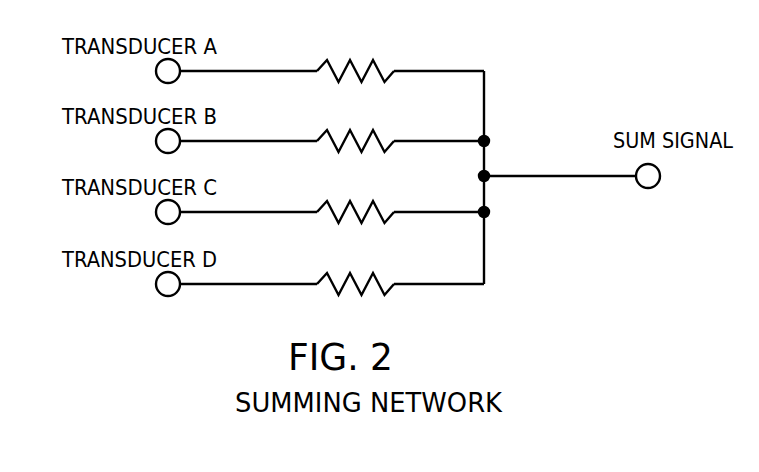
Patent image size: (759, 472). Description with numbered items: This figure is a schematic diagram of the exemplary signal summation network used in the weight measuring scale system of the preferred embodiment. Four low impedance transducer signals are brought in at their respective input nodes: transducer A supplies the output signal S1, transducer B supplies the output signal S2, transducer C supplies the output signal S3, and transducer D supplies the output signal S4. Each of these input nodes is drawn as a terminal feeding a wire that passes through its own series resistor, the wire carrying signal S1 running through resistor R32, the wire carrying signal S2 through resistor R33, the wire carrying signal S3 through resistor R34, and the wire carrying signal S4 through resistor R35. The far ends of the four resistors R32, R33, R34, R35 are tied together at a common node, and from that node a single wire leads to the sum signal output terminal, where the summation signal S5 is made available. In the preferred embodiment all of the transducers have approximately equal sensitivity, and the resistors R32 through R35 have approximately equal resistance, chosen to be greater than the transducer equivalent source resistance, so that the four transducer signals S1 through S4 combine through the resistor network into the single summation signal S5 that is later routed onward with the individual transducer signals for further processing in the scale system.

The transducer A output signal S1 is at (238, 71).
The transducer B output signal S2 is at (238, 141).
The transducer C output signal S3 is at (238, 212).
The transducer D output signal S4 is at (238, 284).
The summation signal S5 is at (578, 176).
The summing resistor R32 is at (364, 50).
The summing resistor R33 is at (364, 120).
The summing resistor R34 is at (364, 191).
The summing resistor R35 is at (364, 263).